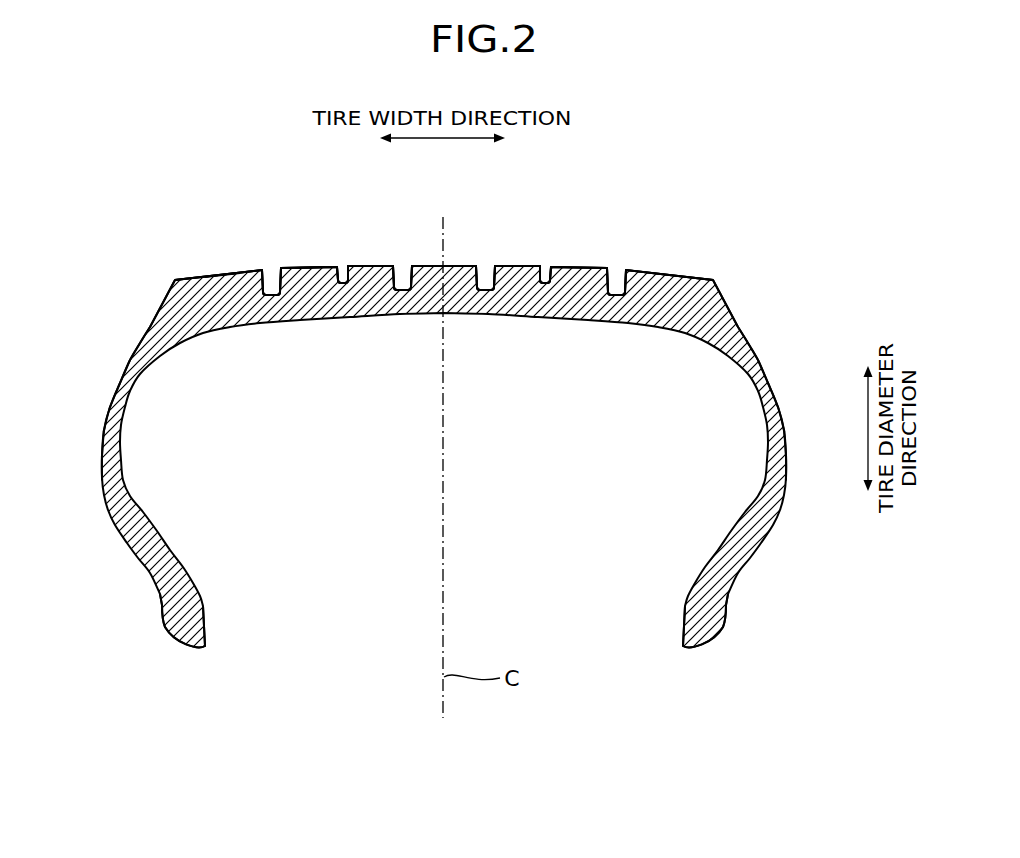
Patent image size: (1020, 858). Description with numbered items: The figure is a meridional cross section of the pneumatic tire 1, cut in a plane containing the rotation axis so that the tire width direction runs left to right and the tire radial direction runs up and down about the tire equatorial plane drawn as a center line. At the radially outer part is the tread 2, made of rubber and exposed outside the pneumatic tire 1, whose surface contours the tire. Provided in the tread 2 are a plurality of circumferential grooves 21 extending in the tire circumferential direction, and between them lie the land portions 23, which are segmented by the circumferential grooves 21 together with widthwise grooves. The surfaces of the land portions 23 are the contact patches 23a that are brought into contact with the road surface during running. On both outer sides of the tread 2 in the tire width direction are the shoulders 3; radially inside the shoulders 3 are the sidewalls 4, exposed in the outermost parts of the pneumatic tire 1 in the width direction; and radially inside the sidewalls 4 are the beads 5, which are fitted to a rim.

The pneumatic tire 1 is at (705, 175).
The tread 2 is at (576, 257).
The circumferential grooves 21 is at (270, 266).
The land portions 23 is at (200, 270).
The contact patches 23a is at (222, 262).
The shoulders 3 is at (118, 334).
The sidewalls 4 is at (92, 444).
The beads 5 is at (150, 620).